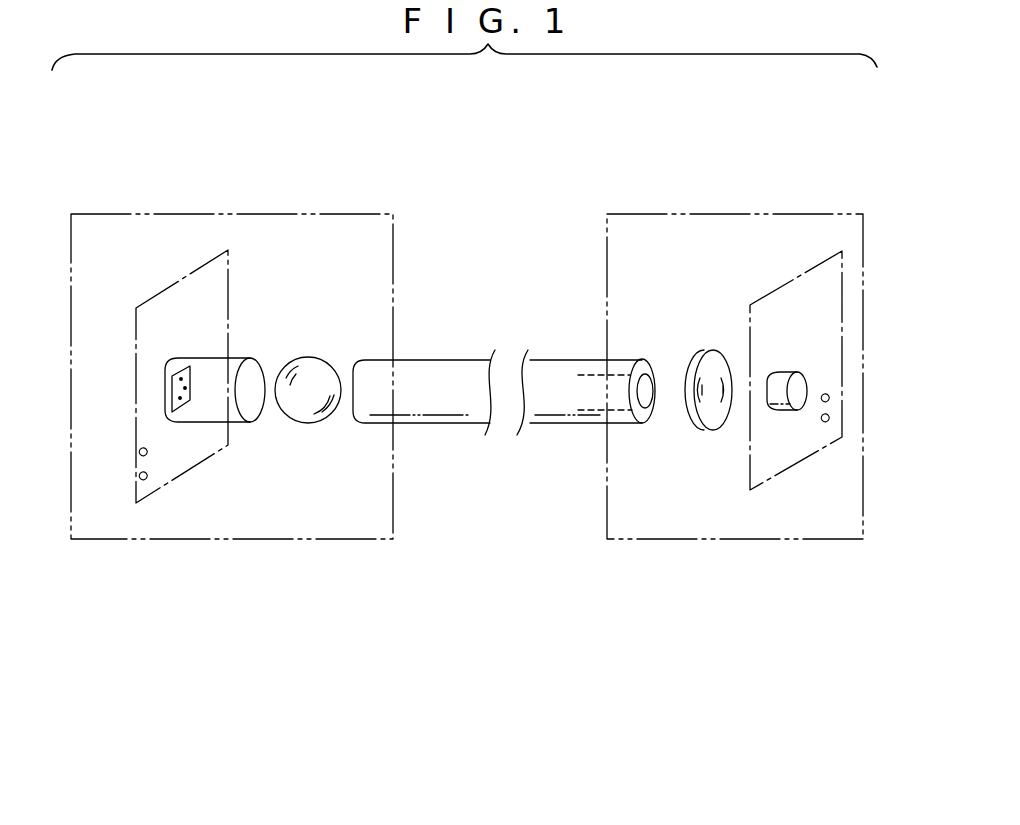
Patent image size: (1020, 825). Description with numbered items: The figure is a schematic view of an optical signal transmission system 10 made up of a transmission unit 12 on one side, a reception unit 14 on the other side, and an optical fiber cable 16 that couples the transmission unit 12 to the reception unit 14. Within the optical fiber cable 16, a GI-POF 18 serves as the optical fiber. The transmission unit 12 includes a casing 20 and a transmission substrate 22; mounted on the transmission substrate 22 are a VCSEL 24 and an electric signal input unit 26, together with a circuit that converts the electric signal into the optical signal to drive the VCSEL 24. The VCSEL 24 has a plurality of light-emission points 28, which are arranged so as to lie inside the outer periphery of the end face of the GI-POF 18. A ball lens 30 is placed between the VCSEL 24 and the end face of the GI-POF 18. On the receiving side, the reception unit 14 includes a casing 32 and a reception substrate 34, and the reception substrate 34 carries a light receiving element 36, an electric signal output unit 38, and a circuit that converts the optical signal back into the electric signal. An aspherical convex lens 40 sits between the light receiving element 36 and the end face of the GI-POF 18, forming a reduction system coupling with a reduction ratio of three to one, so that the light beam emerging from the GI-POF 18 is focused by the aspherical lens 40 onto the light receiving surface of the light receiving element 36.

The optical signal transmission system 10 is at (514, 160).
The transmission unit 12 is at (232, 212).
The reception unit 14 is at (700, 212).
The optical fiber cable 16 is at (457, 358).
The GI-POF 18 is at (600, 375).
The casing 20 is at (376, 541).
The transmission substrate 22 is at (158, 293).
The VCSEL 24 is at (190, 385).
The electric signal input unit 26 is at (148, 480).
The light-emission points 28 is at (180, 405).
The ball lens 30 is at (312, 357).
The casing 32 is at (632, 541).
The reception substrate 34 is at (802, 274).
The light receiving element 36 is at (785, 378).
The electric signal output unit 38 is at (830, 425).
The aspherical lens 40 is at (712, 430).